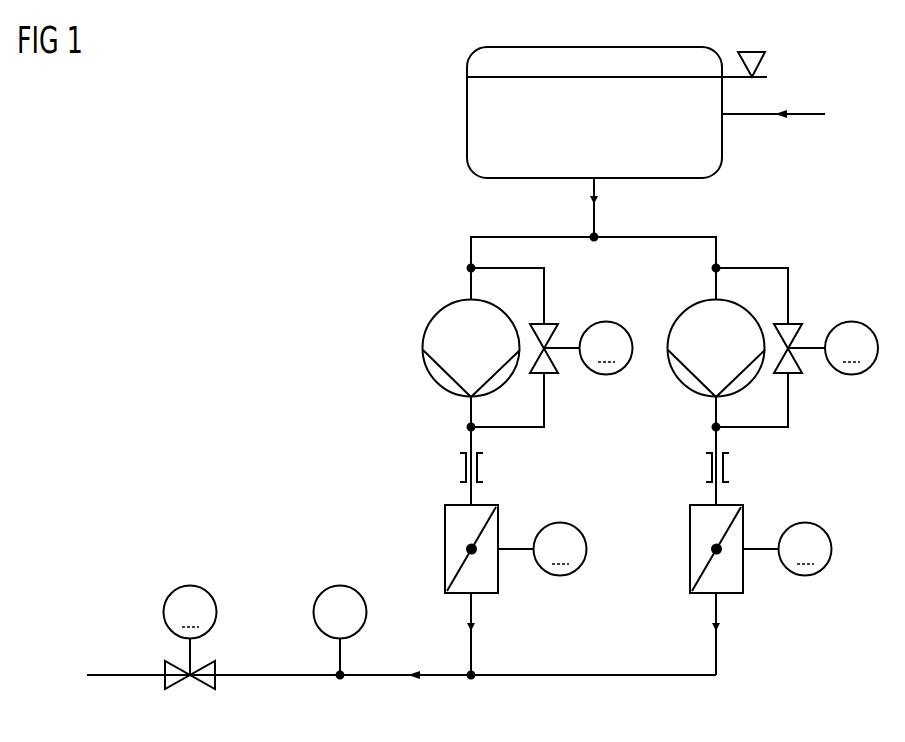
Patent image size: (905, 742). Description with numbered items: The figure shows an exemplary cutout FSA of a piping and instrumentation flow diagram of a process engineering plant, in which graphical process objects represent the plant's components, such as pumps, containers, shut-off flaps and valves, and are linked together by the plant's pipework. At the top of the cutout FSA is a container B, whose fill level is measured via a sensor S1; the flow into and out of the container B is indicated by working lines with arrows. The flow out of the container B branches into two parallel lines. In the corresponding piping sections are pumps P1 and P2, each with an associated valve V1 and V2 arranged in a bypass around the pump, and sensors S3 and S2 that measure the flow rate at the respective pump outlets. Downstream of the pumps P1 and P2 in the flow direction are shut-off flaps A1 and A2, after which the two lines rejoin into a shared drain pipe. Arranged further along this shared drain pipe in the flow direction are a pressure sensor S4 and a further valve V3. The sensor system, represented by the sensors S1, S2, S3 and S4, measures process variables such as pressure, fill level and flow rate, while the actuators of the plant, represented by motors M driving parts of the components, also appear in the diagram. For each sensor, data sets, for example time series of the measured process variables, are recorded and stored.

The container B is at (467, 113).
The sensor S1 is at (760, 63).
The flow diagram cutout FSA is at (215, 207).
The pump P1 is at (483, 362).
The pump P2 is at (728, 362).
The valve V1 is at (546, 322).
The valve V2 is at (790, 322).
The further valve V3 is at (214, 684).
The sensor S3 is at (484, 467).
The sensor S2 is at (730, 467).
The pressure sensor S4 is at (340, 586).
The shut-off flap A1 is at (445, 549).
The shut-off flap A2 is at (690, 549).